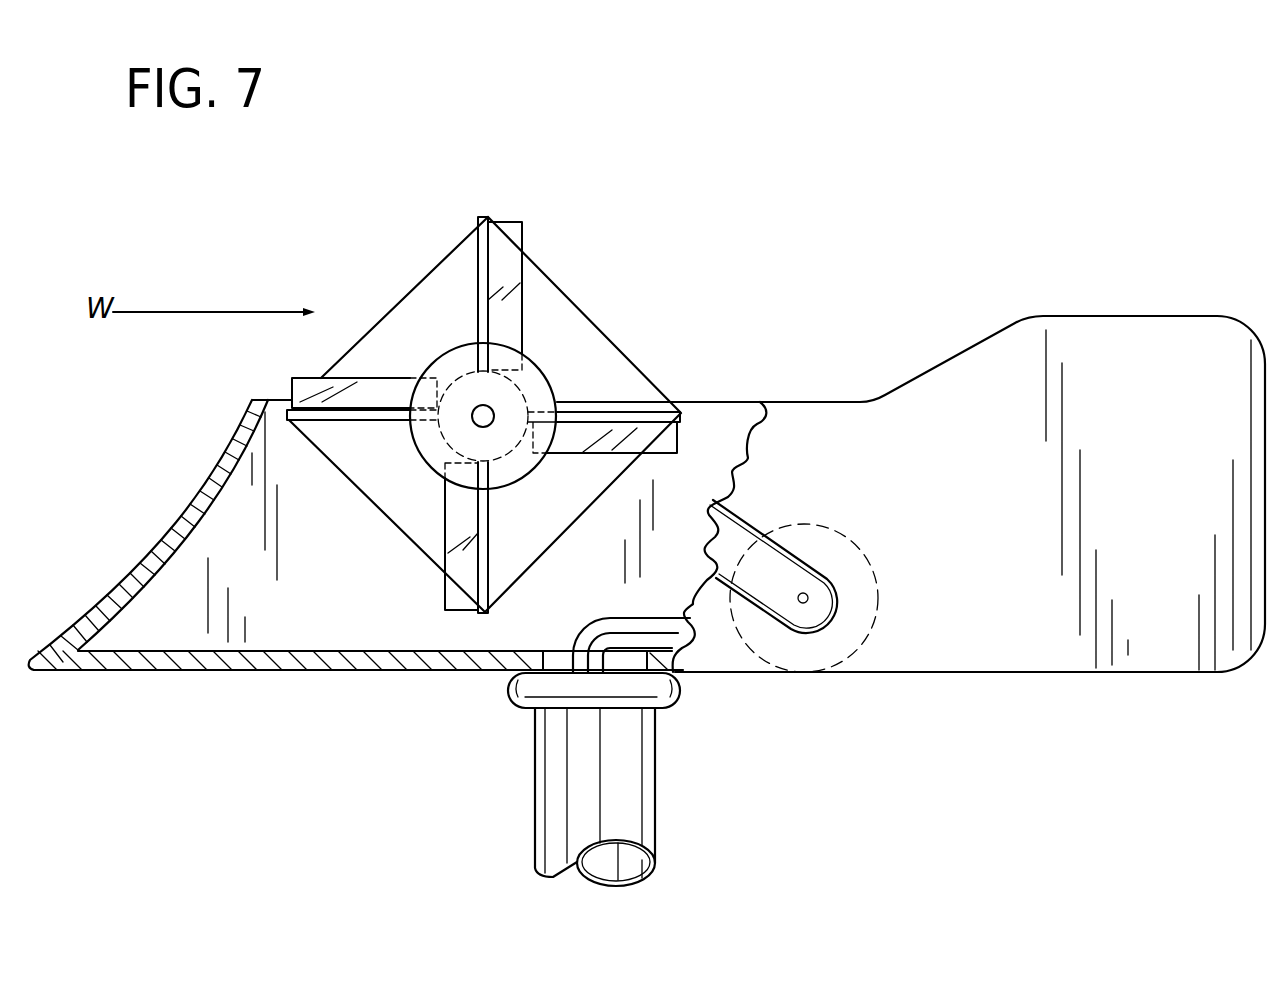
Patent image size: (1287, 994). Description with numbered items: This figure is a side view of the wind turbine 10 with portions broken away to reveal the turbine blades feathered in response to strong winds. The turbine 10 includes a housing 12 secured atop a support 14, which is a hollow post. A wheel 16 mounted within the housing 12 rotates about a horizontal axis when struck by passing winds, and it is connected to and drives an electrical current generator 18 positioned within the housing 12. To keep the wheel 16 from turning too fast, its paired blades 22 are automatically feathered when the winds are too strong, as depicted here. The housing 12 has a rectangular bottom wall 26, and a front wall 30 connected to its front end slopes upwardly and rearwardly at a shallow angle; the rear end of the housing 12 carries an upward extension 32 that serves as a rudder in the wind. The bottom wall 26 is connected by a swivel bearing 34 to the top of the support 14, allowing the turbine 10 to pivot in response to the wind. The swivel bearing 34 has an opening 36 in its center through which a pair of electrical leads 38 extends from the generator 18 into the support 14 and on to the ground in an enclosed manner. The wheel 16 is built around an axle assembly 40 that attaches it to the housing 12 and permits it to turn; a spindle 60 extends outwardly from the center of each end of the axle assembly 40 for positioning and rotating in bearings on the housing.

The wind turbine 10 is at (725, 330).
The housing 12 is at (927, 365).
The support 14 is at (558, 797).
The wheel 16 is at (494, 211).
The electrical current generator 18 is at (831, 527).
The blades 22 is at (507, 273).
The bottom wall 26 is at (253, 672).
The front wall 30 is at (138, 573).
The upward extension 32 is at (1090, 316).
The swivel bearing 34 is at (657, 692).
The opening 36 is at (550, 644).
The electrical leads 38 is at (647, 625).
The axle assembly 40 is at (552, 356).
The spindle 60 is at (489, 427).